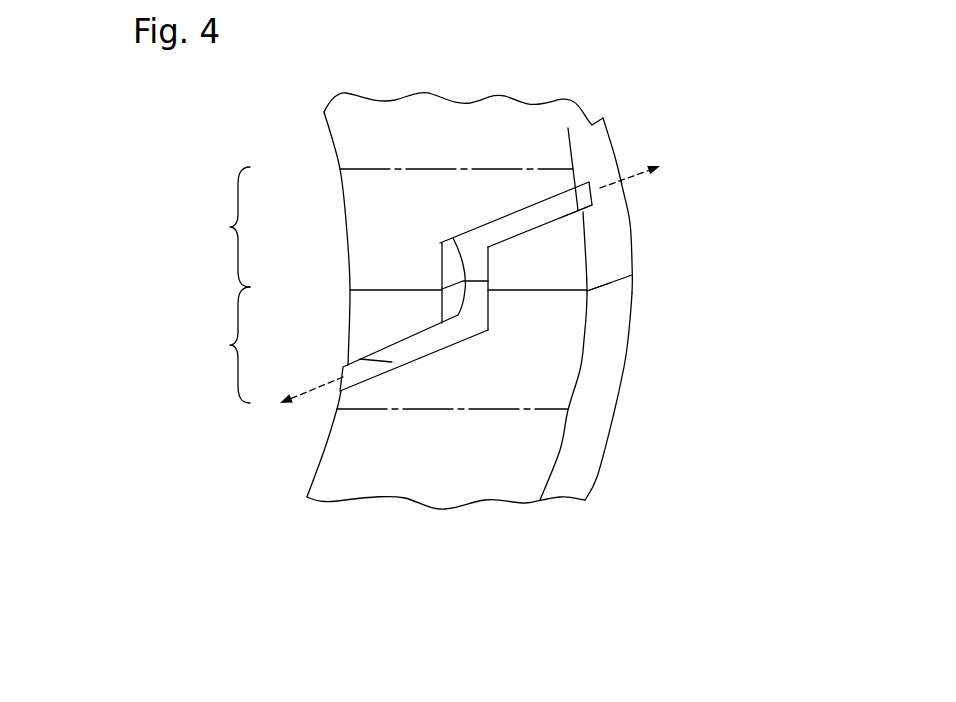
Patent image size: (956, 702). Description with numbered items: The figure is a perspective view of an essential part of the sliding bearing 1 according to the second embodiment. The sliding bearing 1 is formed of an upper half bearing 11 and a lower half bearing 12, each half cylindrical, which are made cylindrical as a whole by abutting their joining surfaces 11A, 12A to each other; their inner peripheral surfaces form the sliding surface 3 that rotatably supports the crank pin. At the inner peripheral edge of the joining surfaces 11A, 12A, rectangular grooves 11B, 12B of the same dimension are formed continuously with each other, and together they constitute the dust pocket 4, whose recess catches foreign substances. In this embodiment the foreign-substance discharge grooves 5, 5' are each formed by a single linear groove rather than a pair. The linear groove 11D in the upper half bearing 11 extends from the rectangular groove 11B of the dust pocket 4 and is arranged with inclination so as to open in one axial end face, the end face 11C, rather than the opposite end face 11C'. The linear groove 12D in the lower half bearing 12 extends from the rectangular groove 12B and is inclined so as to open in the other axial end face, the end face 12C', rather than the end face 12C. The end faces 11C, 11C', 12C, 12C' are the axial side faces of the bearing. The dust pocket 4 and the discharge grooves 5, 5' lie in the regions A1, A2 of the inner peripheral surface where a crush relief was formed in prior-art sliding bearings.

The sliding bearing 1 is at (695, 207).
The sliding surface 3 is at (470, 470).
The dust pocket 4 is at (473, 295).
The foreign-substance discharge groove 5 is at (440, 317).
The foreign-substance discharge groove 5' is at (510, 214).
The upper half bearing 11 is at (602, 152).
The joining surface 11A is at (632, 294).
The rectangular groove 11B is at (461, 264).
The end face 11C is at (650, 205).
The end face 11C' is at (310, 238).
The linear groove 11D is at (544, 224).
The lower half bearing 12 is at (603, 413).
The joining surface 12A is at (605, 278).
The rectangular groove 12B is at (488, 301).
The end face 12C is at (641, 396).
The end face 12C' is at (283, 444).
The linear groove 12D is at (392, 362).
The region A1 is at (225, 227).
The region A2 is at (225, 345).